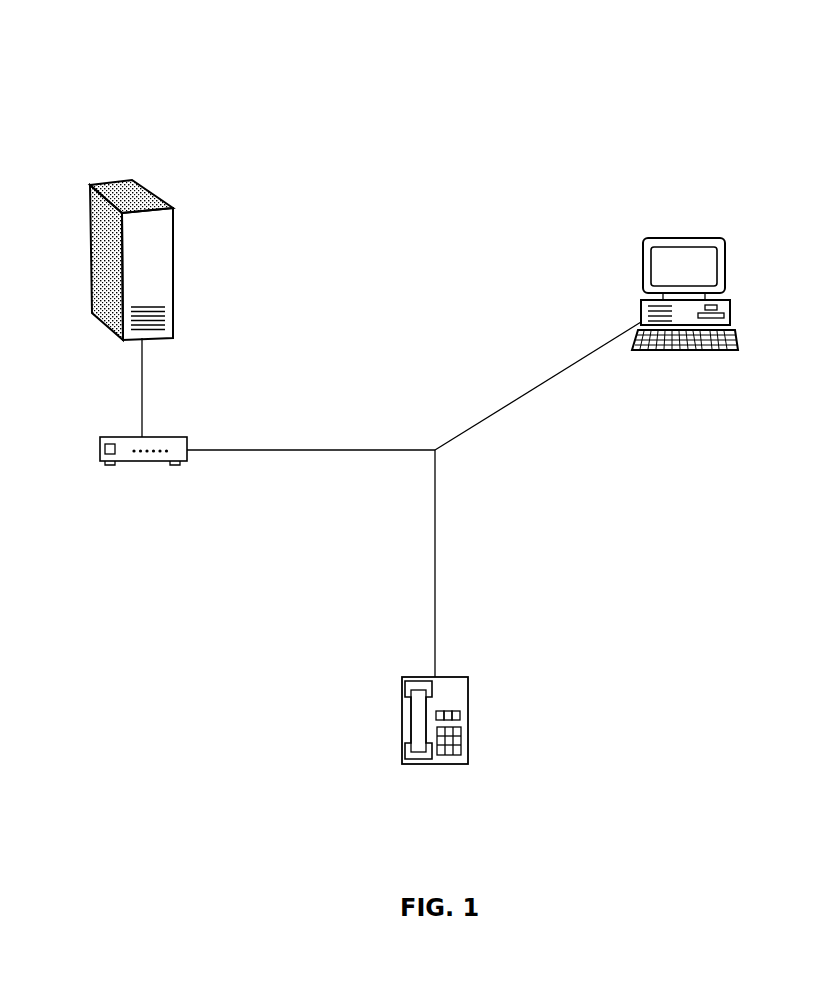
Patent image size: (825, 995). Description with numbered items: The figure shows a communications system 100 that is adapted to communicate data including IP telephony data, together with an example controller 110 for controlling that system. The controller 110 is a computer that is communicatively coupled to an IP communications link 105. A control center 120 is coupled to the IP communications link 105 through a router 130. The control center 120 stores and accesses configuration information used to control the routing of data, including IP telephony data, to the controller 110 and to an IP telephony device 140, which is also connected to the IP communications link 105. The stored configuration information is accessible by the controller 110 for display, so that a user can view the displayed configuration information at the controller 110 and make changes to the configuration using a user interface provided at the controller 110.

The communications system 100 is at (420, 103).
The IP communications link 105 is at (380, 450).
The controller 110 is at (703, 236).
The control center 120 is at (174, 289).
The router 130 is at (180, 437).
The IP telephony device 140 is at (465, 677).